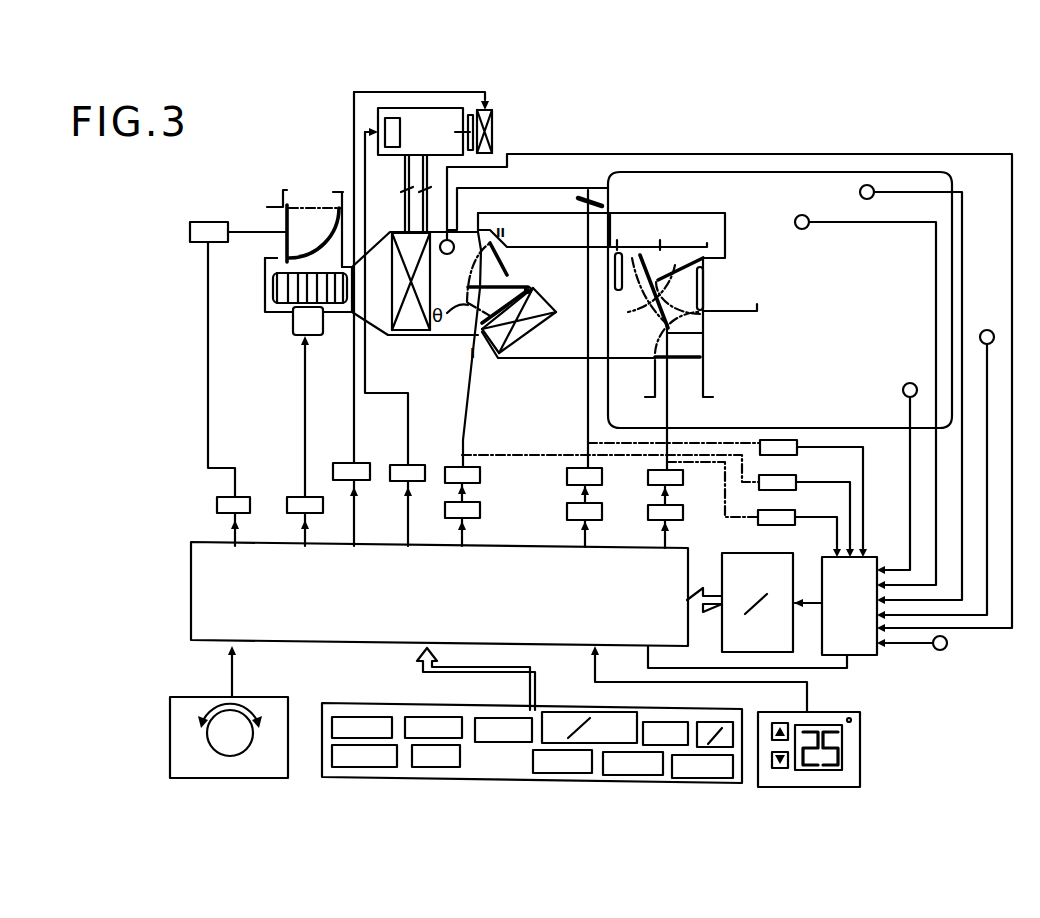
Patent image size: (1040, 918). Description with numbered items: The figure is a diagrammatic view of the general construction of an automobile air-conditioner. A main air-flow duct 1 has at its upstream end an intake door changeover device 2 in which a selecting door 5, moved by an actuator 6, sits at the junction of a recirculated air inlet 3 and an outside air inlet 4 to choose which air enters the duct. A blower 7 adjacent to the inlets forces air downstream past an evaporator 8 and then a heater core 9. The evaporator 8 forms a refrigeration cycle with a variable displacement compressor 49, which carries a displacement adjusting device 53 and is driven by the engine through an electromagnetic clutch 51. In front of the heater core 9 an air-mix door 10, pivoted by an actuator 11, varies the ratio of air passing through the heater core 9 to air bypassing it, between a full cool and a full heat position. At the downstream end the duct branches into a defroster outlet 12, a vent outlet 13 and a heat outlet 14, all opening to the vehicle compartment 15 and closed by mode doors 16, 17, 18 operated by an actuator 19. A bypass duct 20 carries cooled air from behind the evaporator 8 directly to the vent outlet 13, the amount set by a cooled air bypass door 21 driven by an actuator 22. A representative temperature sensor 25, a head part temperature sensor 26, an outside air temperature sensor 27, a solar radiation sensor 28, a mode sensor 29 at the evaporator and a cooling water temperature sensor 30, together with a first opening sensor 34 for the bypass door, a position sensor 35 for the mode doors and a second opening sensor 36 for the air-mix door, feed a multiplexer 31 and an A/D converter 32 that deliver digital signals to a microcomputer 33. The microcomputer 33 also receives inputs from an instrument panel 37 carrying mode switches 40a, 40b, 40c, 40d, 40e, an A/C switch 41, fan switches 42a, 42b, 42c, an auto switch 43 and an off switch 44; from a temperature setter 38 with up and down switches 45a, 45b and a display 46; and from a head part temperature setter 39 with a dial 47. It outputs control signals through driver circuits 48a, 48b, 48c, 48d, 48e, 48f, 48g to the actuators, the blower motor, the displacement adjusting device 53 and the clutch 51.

The main air-flow duct 1 is at (379, 318).
The intake door changeover device 2 is at (323, 203).
The recirculated air inlet 3 is at (271, 249).
The outside air inlet 4 is at (299, 200).
The selecting door 5 is at (283, 222).
The actuator 6 is at (207, 221).
The blower 7 is at (273, 292).
The evaporator 8 is at (412, 325).
The heater core 9 is at (499, 358).
The air-mix door 10 is at (500, 280).
The actuator 11 is at (448, 467).
The defroster outlet 12 is at (648, 253).
The vent outlet 13 is at (735, 300).
The heat outlet 14 is at (688, 381).
The vehicle compartment 15 is at (960, 184).
The mode door 16 is at (627, 243).
The mode door 17 is at (706, 272).
The mode door 18 is at (706, 338).
The actuator 19 is at (648, 480).
The bypass duct 20 is at (526, 197).
The cooled air bypass door 21 is at (581, 194).
The actuator 22 is at (565, 478).
The representative temperature sensor 25 is at (906, 383).
The head part temperature sensor 26 is at (871, 198).
The outside air temperature sensor 27 is at (987, 330).
The solar radiation sensor 28 is at (803, 215).
The mode sensor 29 is at (447, 255).
The cooling water temperature sensor 30 is at (942, 651).
The multiplexer 31 is at (862, 658).
The A/D converter 32 is at (745, 558).
The microcomputer 33 is at (191, 606).
The first opening sensor 34 is at (797, 455).
The position sensor 35 is at (796, 490).
The second opening sensor 36 is at (795, 525).
The instrument panel 37 is at (740, 784).
The temperature setter 38 is at (861, 763).
The head part temperature setter 39 is at (287, 772).
The mode switch 40a is at (365, 717).
The mode switch 40b is at (450, 717).
The mode switch 40c is at (515, 718).
The mode switch 40d is at (601, 712).
The mode switch 40e is at (667, 722).
The A/C switch 41 is at (713, 722).
The fan switch 42a is at (550, 774).
The fan switch 42b is at (627, 776).
The fan switch 42c is at (682, 779).
The auto switch 43 is at (360, 768).
The off switch 44 is at (443, 768).
The up switch 45a is at (780, 723).
The down switch 45b is at (780, 768).
The display 46 is at (837, 771).
The dial 47 is at (245, 718).
The driver circuit 48a is at (250, 505).
The driver circuit 48b is at (480, 510).
The driver circuit 48c is at (648, 514).
The driver circuit 48d is at (567, 514).
The driver circuit 48e is at (295, 497).
The driver circuit 48f is at (345, 463).
The driver circuit 48g is at (398, 465).
The compressor 49 is at (492, 131).
The electromagnetic clutch 51 is at (488, 114).
The displacement adjusting device 53 is at (392, 148).